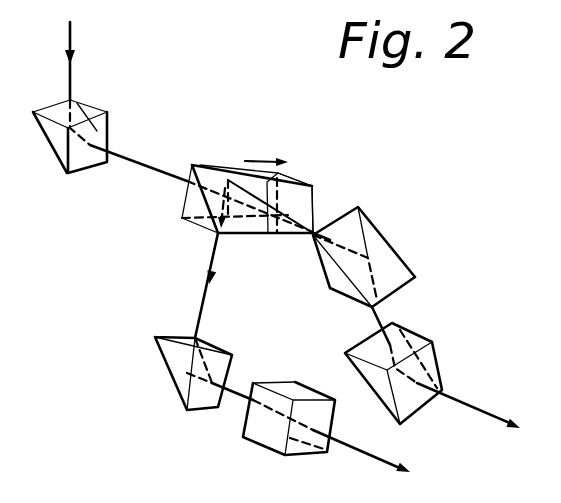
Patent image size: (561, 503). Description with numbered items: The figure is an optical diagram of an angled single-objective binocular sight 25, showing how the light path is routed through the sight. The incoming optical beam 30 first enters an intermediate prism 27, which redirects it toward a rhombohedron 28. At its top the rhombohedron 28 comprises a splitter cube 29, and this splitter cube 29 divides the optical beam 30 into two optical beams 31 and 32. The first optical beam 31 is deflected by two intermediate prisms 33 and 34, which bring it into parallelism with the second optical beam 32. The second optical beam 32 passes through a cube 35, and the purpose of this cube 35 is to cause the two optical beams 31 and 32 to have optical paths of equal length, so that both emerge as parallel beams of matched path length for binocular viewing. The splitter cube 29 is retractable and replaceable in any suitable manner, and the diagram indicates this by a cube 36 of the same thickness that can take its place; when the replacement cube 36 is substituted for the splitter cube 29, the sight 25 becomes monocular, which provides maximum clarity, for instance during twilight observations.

The angled viewing sight 25 is at (88, 310).
The intermediate prism 27 is at (57, 145).
The rhombohedron 28 is at (174, 199).
The splitter cube 29 is at (242, 168).
The optical beam 30 is at (152, 165).
The optical beam 31 is at (315, 233).
The optical beam 32 is at (208, 292).
The intermediate prism 33 is at (395, 258).
The intermediate prism 34 is at (435, 368).
The cube 35 is at (285, 387).
The replacement cube 36 is at (288, 178).